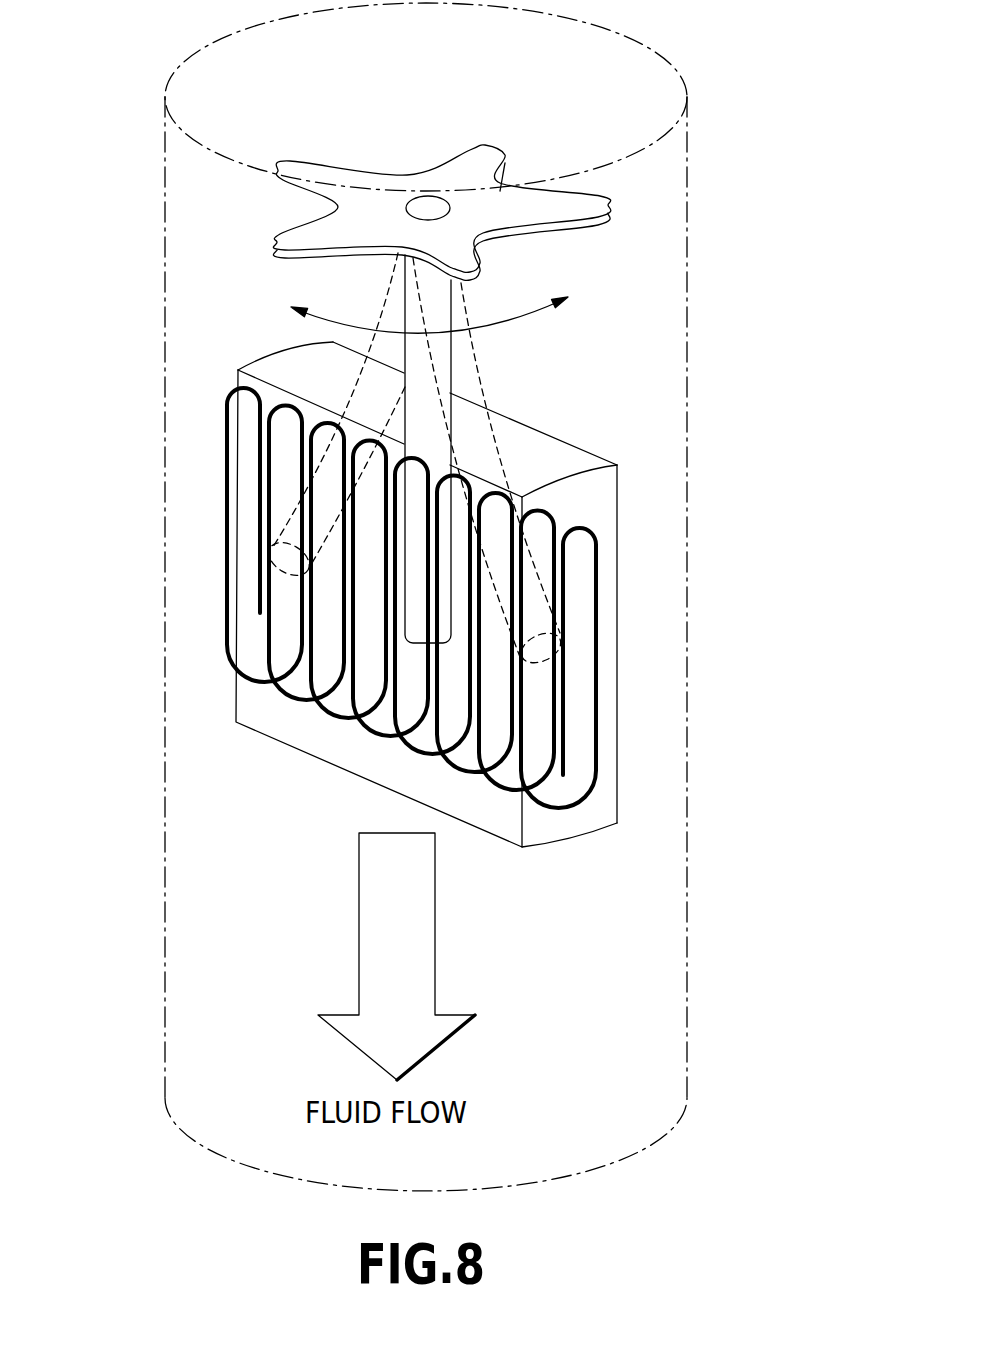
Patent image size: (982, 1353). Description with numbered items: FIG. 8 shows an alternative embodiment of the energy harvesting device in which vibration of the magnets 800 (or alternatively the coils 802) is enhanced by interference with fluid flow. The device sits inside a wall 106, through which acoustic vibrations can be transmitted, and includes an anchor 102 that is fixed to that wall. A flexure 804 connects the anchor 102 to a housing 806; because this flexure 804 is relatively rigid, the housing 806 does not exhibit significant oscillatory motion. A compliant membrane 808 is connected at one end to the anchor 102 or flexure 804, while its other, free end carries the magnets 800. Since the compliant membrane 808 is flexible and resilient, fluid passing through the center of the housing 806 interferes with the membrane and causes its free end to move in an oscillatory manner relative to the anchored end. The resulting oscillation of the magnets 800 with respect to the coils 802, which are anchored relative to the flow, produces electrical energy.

The wall 106 is at (166, 109).
The anchor member 102 is at (583, 207).
The flexure 804 is at (415, 350).
The compliant membrane 808 is at (478, 445).
The housing 806 is at (597, 493).
The coils 802 is at (577, 740).
The magnets 800 is at (306, 538).